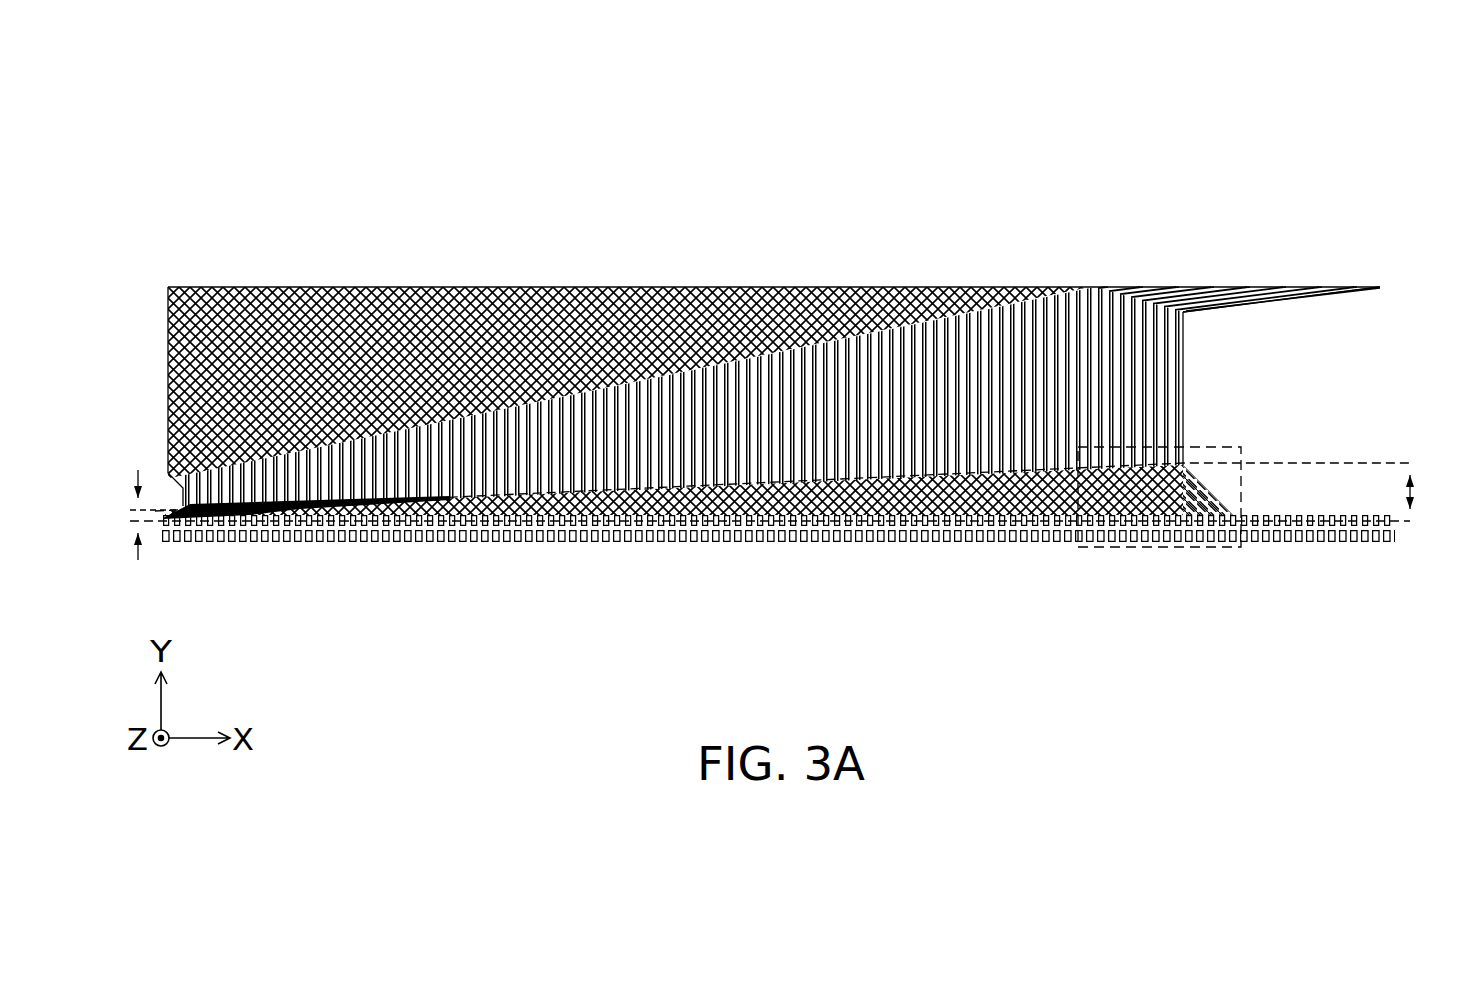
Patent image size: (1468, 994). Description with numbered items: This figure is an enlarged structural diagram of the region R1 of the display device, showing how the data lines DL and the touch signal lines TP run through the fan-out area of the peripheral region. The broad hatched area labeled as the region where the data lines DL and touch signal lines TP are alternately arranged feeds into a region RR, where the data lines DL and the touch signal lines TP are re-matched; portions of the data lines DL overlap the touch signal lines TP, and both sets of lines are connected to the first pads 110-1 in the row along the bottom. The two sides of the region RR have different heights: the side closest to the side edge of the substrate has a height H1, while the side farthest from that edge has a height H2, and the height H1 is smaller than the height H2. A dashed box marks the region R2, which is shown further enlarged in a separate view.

The region R1 is at (178, 103).
The data line DL is at (1144, 508).
The touch signal line TP is at (1225, 488).
The region RR is at (970, 523).
The first pad 110-1 is at (322, 536).
The region R2 is at (1190, 549).
The height H1 is at (137, 515).
The height H2 is at (1435, 492).